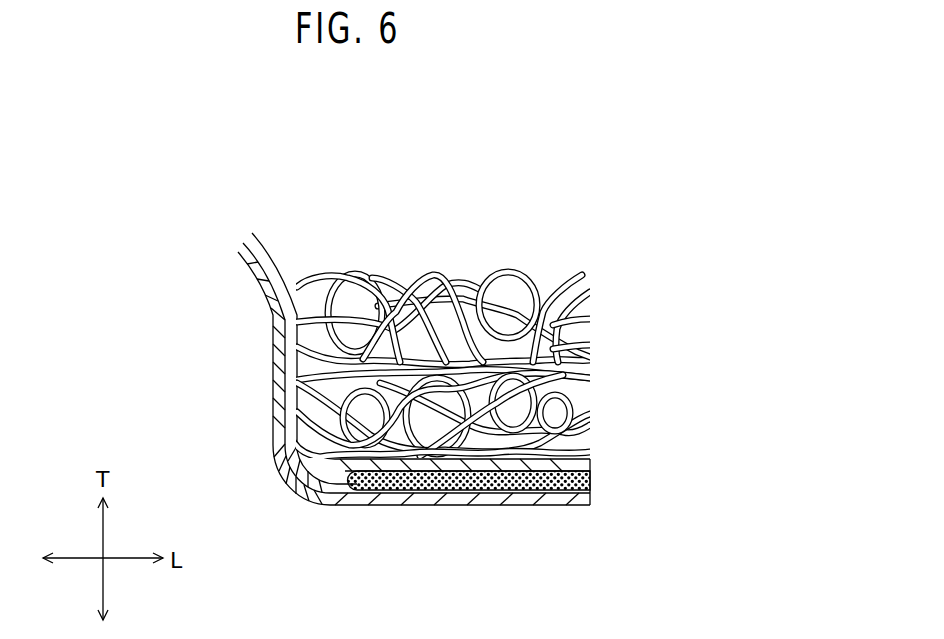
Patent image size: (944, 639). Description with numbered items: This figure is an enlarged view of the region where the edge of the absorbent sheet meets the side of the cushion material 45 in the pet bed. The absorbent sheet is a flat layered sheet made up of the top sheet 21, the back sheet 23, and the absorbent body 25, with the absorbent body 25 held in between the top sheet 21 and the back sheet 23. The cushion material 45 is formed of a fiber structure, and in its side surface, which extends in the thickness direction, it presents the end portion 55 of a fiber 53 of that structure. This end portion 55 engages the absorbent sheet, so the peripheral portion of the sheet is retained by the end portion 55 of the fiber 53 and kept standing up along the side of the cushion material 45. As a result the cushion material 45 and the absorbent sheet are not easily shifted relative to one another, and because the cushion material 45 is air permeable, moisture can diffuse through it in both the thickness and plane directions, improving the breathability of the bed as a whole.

The top sheet 21 is at (268, 257).
The back sheet 23 is at (443, 496).
The absorbent body 25 is at (387, 484).
The cushion material 45 is at (541, 248).
The fiber 53 is at (573, 282).
The end portion 55 is at (294, 272).